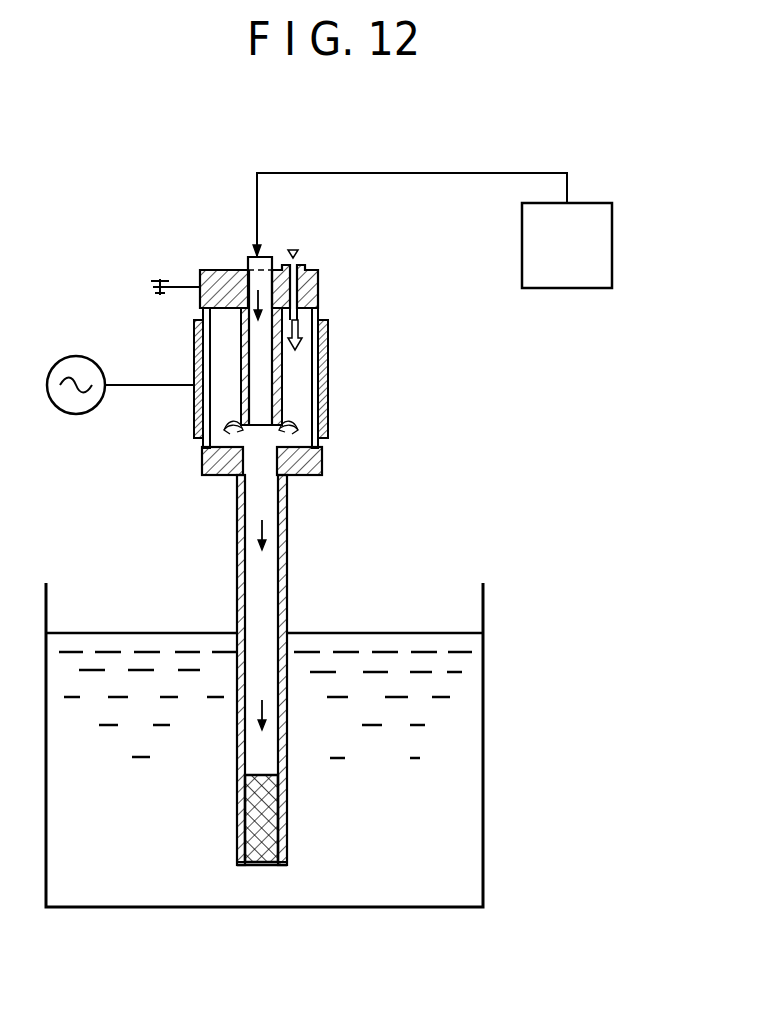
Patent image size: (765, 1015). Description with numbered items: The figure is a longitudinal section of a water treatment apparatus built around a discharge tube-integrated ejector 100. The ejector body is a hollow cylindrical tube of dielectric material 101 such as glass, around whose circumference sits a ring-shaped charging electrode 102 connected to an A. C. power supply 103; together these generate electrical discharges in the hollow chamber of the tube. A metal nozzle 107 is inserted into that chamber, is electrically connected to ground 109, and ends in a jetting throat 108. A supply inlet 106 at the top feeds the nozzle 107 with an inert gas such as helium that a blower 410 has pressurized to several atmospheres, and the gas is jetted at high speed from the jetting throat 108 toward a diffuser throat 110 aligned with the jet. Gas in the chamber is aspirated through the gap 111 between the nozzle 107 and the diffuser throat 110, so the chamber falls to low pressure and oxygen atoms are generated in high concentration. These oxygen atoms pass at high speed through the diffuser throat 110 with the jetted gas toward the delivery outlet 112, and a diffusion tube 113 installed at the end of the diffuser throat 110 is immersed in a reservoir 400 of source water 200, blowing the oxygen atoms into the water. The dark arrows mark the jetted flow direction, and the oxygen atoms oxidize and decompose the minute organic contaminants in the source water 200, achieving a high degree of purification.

The discharge tube-integrated ejector 100 is at (318, 284).
The cylindrical tube of dielectric material 101 is at (328, 445).
The ring-shaped charging electrode 102 is at (330, 405).
The A. C. power supply 103 is at (75, 414).
The supply inlet 106 is at (248, 284).
The nozzle 107 is at (283, 378).
The jetting throat 108 is at (258, 427).
The ground 109 is at (160, 283).
The diffuser throat 110 is at (288, 557).
The gap 111 is at (322, 462).
The delivery outlet 112 is at (270, 866).
The diffusion tube 113 is at (248, 866).
The source water 200 is at (470, 688).
The reservoir 400 is at (485, 805).
The blower 410 is at (612, 247).